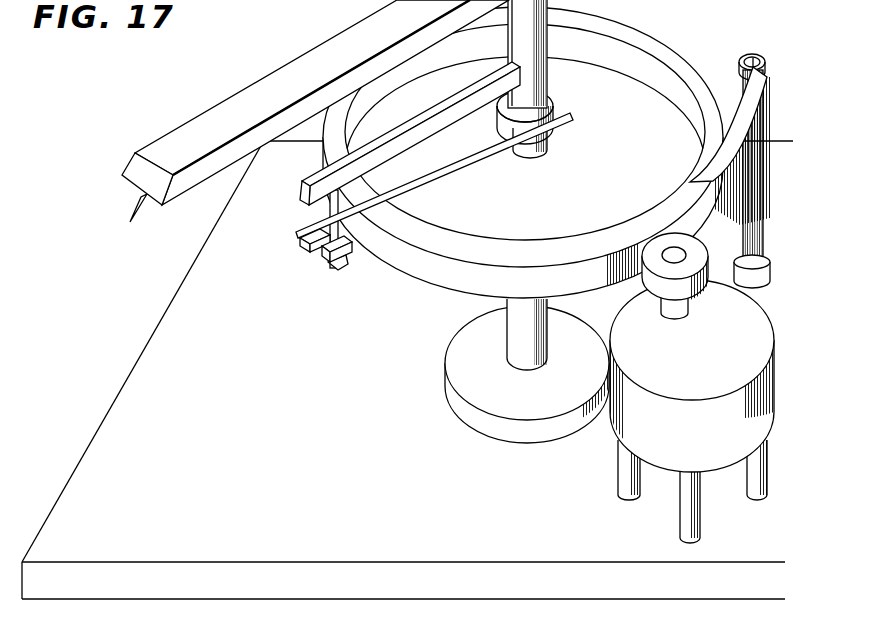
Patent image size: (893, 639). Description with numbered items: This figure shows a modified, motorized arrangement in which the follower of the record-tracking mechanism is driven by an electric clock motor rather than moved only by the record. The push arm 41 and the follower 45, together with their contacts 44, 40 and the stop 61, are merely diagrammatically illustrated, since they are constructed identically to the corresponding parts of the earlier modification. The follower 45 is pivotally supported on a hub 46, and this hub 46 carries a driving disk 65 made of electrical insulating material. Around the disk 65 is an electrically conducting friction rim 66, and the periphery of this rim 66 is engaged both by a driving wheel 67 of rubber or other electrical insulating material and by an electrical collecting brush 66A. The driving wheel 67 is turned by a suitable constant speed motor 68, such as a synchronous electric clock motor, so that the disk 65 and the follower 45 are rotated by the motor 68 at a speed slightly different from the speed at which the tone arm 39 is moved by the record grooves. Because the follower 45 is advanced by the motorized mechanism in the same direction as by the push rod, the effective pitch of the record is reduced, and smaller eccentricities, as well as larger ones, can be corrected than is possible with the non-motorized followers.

The tone arm 39 is at (228, 103).
The contact 40 is at (330, 214).
The push arm 41 is at (310, 184).
The contact 44 is at (300, 245).
The follower 45 is at (457, 165).
The hub 46 is at (553, 104).
The stop 61 is at (338, 250).
The driving disk 65 is at (660, 108).
The friction rim 66 is at (663, 208).
The electrical collecting brush 66A is at (723, 127).
The driving wheel 67 is at (695, 287).
The constant speed motor 68 is at (668, 450).